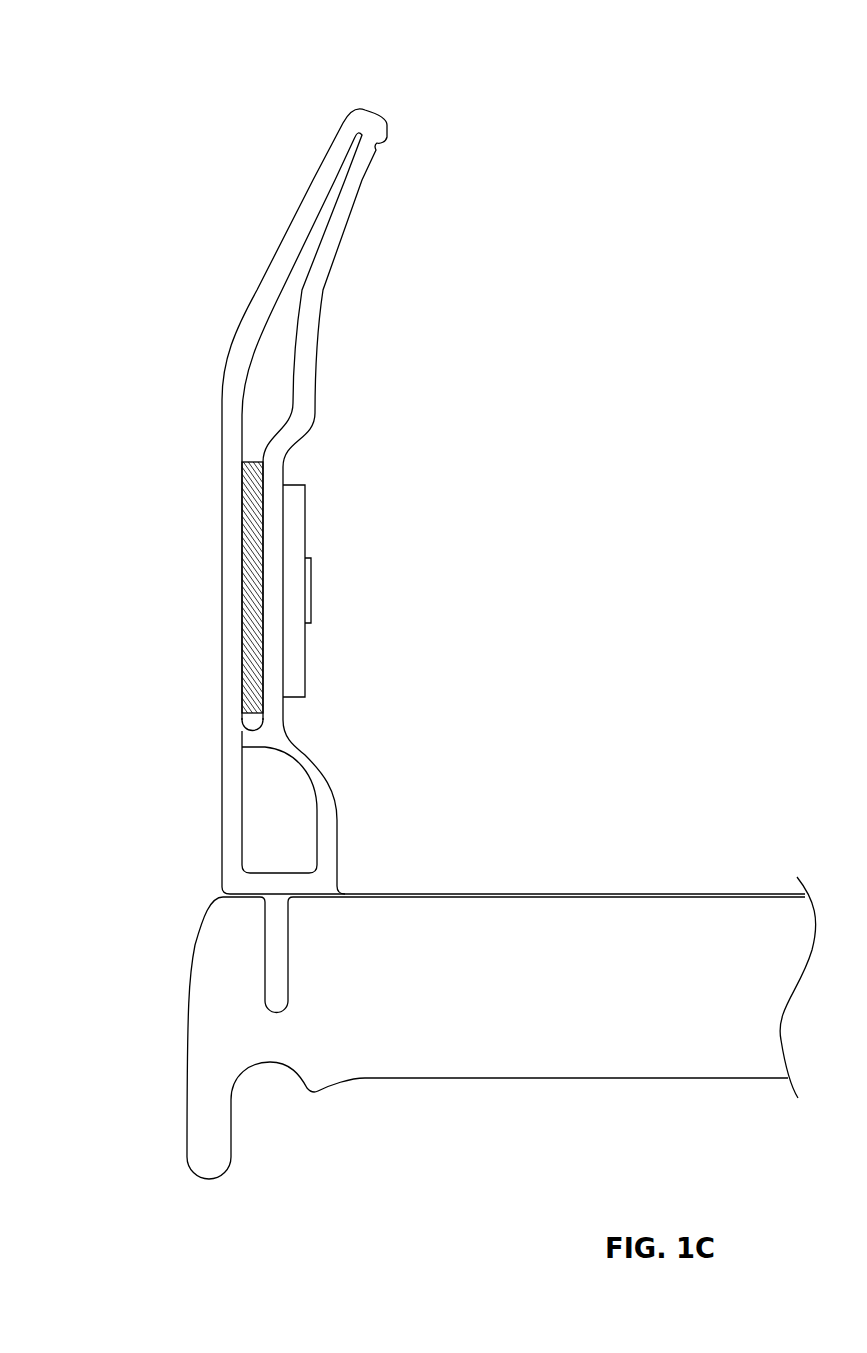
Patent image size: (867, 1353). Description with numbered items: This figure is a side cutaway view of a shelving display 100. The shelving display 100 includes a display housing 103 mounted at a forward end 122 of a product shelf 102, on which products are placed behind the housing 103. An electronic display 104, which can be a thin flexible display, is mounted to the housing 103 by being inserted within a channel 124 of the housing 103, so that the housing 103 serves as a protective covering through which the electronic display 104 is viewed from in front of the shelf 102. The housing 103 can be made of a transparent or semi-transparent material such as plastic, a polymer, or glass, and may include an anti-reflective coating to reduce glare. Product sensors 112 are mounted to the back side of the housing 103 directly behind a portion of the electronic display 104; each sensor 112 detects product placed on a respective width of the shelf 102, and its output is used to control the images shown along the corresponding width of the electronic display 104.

The shelving display 100 is at (128, 67).
The display housing 103 is at (333, 140).
The electronic display 104 is at (253, 450).
The product sensors 112 is at (312, 550).
The channel 124 is at (249, 726).
The product shelf 102 is at (566, 998).
The forward end 122 is at (178, 1047).